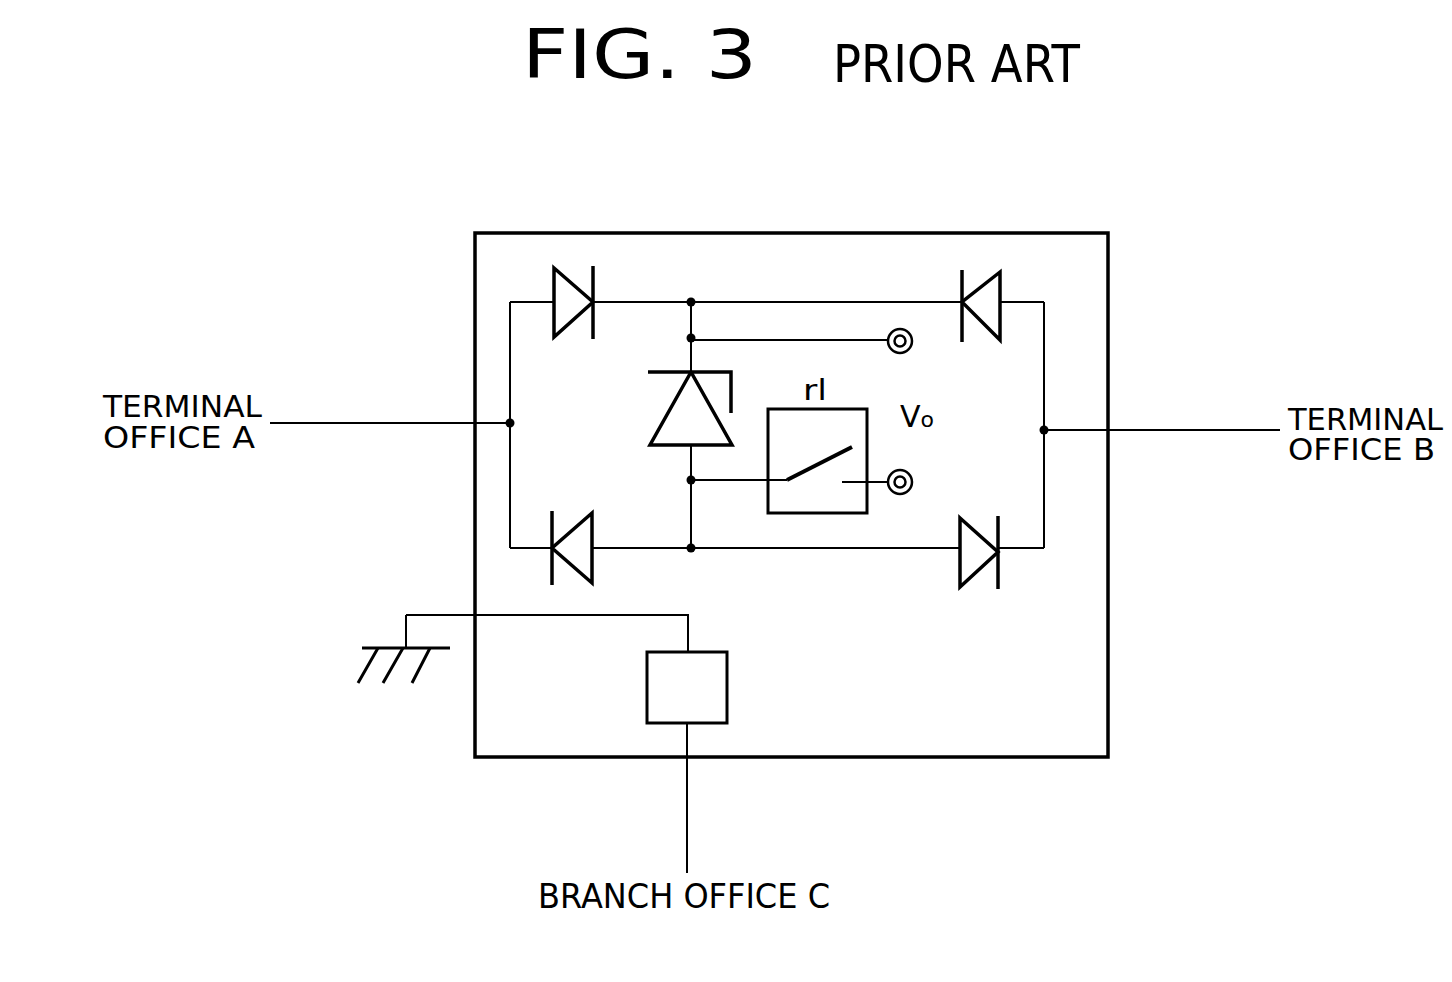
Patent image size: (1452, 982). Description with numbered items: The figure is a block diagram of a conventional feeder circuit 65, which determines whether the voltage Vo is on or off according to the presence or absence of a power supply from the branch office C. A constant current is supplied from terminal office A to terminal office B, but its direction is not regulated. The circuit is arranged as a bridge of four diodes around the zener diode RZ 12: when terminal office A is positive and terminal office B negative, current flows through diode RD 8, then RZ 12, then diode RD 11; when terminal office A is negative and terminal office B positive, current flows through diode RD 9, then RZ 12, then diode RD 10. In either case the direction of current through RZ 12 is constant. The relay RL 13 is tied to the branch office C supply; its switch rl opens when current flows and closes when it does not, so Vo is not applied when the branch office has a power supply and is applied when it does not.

The rectifier diode RD 8 is at (562, 268).
The rectifier diode RD 9 is at (994, 275).
The rectifier diode RD 10 is at (594, 562).
The rectifier diode RD 11 is at (970, 585).
The zener diode RZ 12 is at (676, 407).
The relay RL 13 is at (727, 692).
The feeder circuit 65 is at (785, 233).